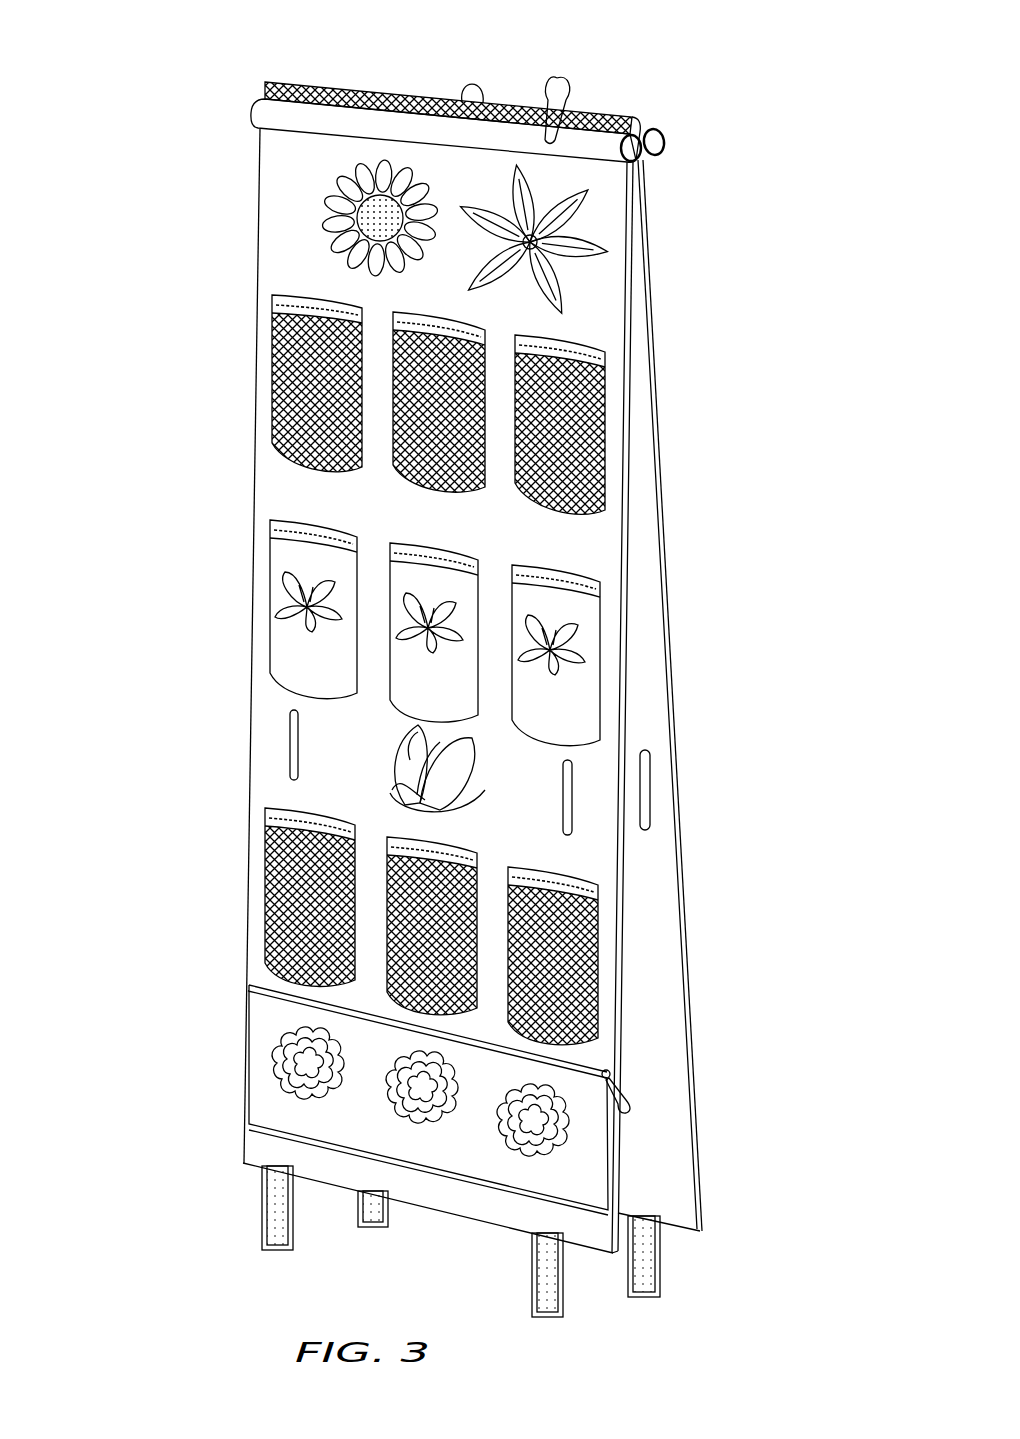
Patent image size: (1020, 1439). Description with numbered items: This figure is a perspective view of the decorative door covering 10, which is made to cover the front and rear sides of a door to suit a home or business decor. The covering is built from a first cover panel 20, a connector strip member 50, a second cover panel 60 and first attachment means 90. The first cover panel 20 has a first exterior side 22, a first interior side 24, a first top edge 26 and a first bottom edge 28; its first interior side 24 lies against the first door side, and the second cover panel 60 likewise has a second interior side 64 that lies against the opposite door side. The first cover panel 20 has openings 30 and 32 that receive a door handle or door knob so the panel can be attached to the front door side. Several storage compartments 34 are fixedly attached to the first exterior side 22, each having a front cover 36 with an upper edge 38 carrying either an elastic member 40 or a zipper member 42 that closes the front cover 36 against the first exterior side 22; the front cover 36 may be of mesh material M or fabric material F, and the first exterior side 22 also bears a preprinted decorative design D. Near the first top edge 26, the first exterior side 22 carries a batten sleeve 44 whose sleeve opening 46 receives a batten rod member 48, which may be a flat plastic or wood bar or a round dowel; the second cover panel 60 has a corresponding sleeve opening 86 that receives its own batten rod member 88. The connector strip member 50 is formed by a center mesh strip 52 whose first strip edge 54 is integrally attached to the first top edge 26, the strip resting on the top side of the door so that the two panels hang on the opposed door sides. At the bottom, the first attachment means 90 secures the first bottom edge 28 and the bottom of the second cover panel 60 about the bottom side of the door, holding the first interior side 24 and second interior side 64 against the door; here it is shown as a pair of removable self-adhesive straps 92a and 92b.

The decorative door covering 10 is at (439, 686).
The first cover panel 20 is at (463, 697).
The first exterior side 22 is at (275, 786).
The first interior side 24 is at (623, 912).
The first top edge 26 is at (483, 103).
The first bottom edge 28 is at (457, 1193).
The opening 30 is at (561, 818).
The opening 32 is at (301, 740).
The storage compartment 34 is at (463, 769).
The front cover 36 is at (451, 761).
The upper edge 38 is at (452, 327).
The elastic member 40 is at (547, 348).
The zipper member 42 is at (622, 1075).
The batten sleeve 44 is at (288, 122).
The sleeve opening 46 is at (646, 165).
The batten rod member 48 is at (637, 165).
The connector strip member 50 is at (472, 157).
The center mesh strip 52 is at (378, 100).
The first strip edge 54 is at (549, 96).
The second cover panel 60 is at (696, 695).
The second interior side 64 is at (640, 457).
The sleeve opening 86 is at (676, 152).
The batten rod member 88 is at (662, 131).
The first attachment means 90 is at (456, 1262).
The removable self-adhesive strap 92a is at (277, 1233).
The removable self-adhesive strap 92b is at (373, 1213).
The preprinted decorative design D is at (326, 235).
The fabric material F is at (283, 671).
The mesh material M is at (283, 442).